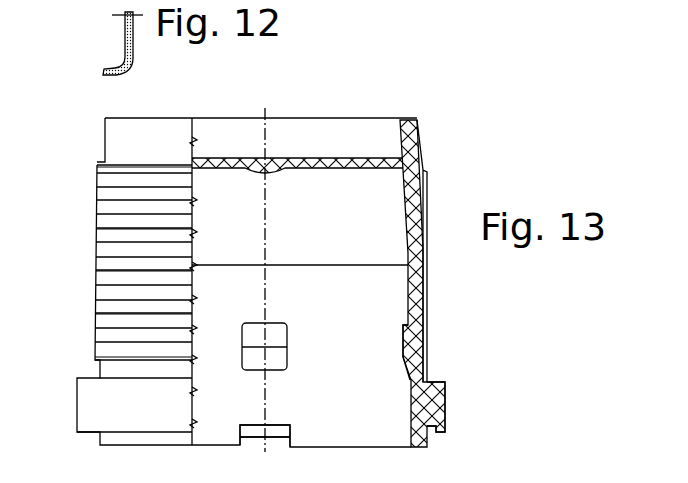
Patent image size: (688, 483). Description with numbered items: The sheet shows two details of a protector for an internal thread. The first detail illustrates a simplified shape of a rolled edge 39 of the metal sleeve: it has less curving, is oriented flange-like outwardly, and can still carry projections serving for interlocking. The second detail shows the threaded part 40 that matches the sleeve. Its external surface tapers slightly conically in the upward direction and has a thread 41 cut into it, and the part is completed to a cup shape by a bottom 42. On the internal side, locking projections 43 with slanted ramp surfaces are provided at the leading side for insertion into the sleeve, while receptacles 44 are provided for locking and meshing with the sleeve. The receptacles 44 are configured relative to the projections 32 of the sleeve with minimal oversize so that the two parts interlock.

In FIG. 12, the projections 32 is at (344, 10).
In FIG. 12, the rolled edge 39 is at (124, 45).
In FIG. 13, the threaded part 40 is at (470, 122).
In FIG. 13, the thread 41 is at (427, 287).
In FIG. 13, the bottom 42 is at (300, 162).
In FIG. 13, the locking projections 43 is at (403, 340).
In FIG. 13, the receptacles 44 is at (273, 443).